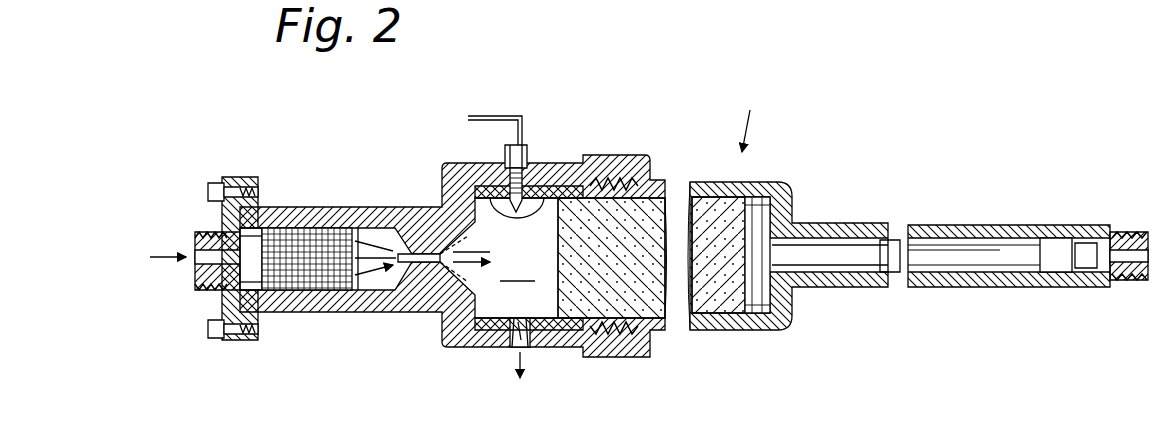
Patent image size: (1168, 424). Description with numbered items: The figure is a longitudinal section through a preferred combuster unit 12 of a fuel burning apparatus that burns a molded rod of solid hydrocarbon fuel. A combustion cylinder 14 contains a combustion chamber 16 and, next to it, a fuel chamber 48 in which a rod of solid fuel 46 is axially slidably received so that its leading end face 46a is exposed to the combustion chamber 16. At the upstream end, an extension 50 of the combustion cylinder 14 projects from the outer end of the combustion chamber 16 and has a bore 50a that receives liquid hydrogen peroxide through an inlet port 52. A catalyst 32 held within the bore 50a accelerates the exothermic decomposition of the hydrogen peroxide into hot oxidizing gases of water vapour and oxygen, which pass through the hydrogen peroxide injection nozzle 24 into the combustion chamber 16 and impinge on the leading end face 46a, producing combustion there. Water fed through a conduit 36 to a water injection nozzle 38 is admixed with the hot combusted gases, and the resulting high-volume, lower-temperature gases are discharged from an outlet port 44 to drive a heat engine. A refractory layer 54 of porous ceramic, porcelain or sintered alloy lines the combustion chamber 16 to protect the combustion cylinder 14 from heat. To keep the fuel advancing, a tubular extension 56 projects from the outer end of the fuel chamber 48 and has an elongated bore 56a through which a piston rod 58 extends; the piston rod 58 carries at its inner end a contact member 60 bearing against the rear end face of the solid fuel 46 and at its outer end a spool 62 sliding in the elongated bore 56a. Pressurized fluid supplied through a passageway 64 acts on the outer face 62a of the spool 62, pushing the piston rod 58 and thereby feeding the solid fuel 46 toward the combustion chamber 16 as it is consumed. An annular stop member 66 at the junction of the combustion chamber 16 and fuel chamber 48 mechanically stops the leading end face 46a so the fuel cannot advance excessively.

The combuster unit 12 is at (789, 206).
The combustion cylinder 14 is at (575, 162).
The combustion chamber 16 is at (517, 268).
The hydrogen peroxide injection nozzle 24 is at (418, 252).
The catalyst 32 is at (250, 248).
The conduit 36 is at (490, 117).
The water injection nozzle 38 is at (528, 175).
The outlet port 44 is at (520, 320).
The solid fuel 46 is at (688, 320).
The leading end face 46a is at (558, 268).
The fuel chamber 48 is at (686, 192).
The extension 50 is at (330, 207).
The bore 50a is at (362, 292).
The inlet port 52 is at (197, 255).
The refractory layer 54 is at (445, 320).
The tubular extension 56 is at (950, 225).
The elongated bore 56a is at (888, 280).
The piston rod 58 is at (935, 272).
The contact member 60 is at (770, 210).
The spool 62 is at (1050, 238).
The outer face 62a is at (1085, 268).
The passageway 64 is at (1125, 235).
The stop member 66 is at (492, 212).